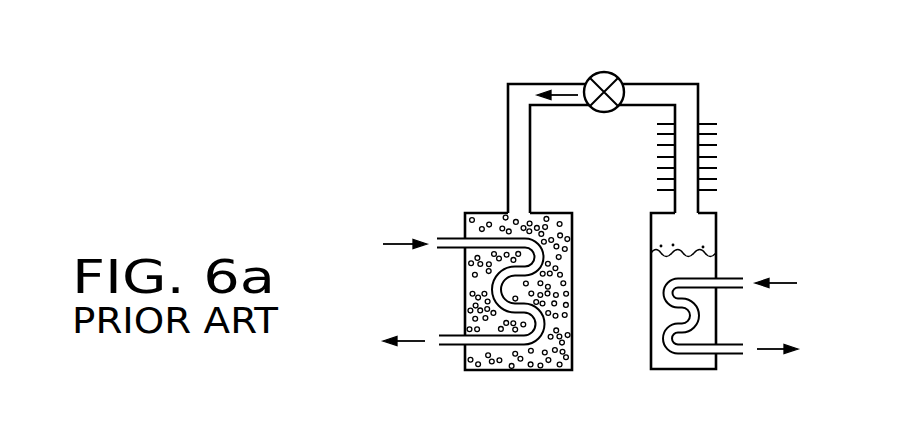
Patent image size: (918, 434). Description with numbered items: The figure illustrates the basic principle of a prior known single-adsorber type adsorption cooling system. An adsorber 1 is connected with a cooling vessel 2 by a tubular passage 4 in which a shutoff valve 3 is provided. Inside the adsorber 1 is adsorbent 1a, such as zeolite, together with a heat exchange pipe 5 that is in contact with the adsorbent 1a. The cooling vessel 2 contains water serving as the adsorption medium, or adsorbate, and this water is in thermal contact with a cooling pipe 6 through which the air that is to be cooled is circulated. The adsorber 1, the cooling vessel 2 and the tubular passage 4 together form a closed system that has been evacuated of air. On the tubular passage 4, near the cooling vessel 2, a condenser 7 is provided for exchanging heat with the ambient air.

The adsorber 1 is at (506, 291).
The adsorbent 1a is at (483, 212).
The cooling vessel 2 is at (688, 369).
The shutoff valve 3 is at (614, 74).
The tubular passage 4 is at (517, 95).
The heat exchange pipe 5 is at (452, 247).
The cooling pipe 6 is at (728, 283).
The condenser 7 is at (686, 177).